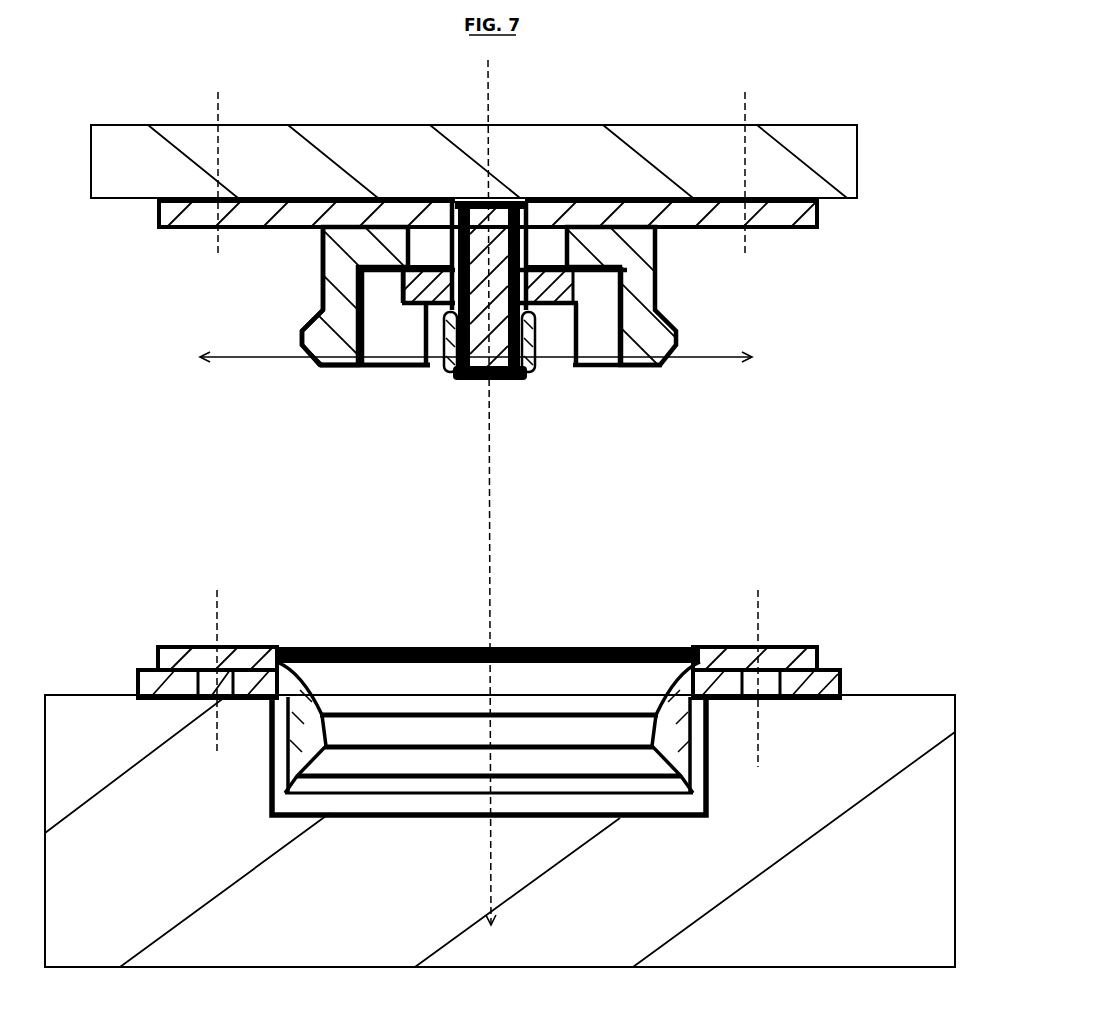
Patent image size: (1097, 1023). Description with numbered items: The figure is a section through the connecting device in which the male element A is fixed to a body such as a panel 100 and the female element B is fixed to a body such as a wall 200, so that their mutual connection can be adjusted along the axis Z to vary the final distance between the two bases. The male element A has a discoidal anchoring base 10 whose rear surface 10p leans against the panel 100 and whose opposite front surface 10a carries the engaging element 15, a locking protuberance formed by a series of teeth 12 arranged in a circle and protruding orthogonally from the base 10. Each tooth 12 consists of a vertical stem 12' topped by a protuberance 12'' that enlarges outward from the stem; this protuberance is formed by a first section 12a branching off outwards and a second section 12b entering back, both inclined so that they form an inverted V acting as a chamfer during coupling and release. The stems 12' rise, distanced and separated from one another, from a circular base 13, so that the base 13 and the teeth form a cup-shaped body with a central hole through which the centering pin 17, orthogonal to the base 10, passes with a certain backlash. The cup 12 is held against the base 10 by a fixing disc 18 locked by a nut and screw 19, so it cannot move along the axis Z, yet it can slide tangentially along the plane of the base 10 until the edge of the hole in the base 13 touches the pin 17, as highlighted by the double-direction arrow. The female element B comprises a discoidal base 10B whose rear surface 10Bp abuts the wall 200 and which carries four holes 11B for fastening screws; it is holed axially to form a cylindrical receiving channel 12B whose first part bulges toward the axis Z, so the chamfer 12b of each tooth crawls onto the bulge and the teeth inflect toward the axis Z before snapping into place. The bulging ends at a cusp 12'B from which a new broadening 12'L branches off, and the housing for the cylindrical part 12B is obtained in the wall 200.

The panel 100 is at (413, 175).
The discoidal base 10 is at (560, 193).
The rear surface 10p is at (778, 198).
The front surface 10a is at (762, 228).
The tooth 12 is at (419, 315).
The vertical stem 12' is at (264, 268).
The protuberance 12'' is at (256, 337).
The first section 12a is at (665, 320).
The second section 12b is at (320, 358).
The circular base 13 is at (345, 249).
The engaging element 15 is at (551, 334).
The centering pin 17 is at (522, 380).
The fixing disc 18 is at (412, 290).
The nut and screw 19 is at (456, 362).
The wall 200 is at (832, 905).
The discoidal base 10B is at (514, 655).
The rear surface 10Bp is at (808, 698).
The holes 11B is at (207, 650).
The cylindrical receiving channel 12B is at (489, 692).
The cusp 12'B is at (489, 712).
The broadening 12'L is at (489, 791).
The male element A is at (170, 385).
The female element B is at (125, 577).
The axis Z is at (503, 492).